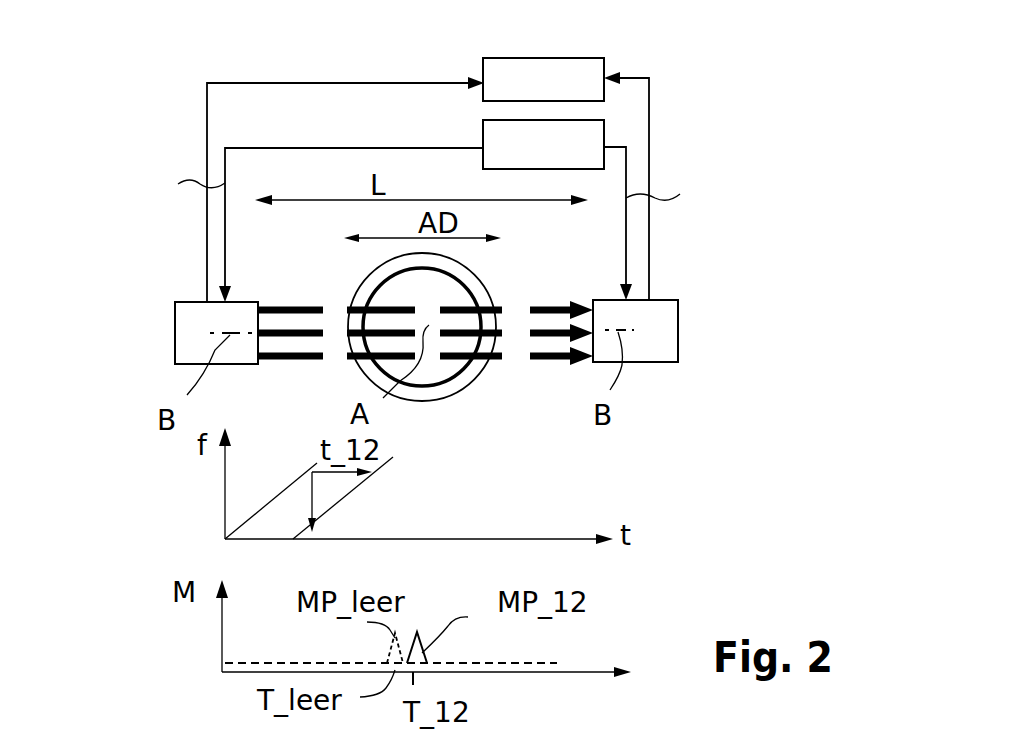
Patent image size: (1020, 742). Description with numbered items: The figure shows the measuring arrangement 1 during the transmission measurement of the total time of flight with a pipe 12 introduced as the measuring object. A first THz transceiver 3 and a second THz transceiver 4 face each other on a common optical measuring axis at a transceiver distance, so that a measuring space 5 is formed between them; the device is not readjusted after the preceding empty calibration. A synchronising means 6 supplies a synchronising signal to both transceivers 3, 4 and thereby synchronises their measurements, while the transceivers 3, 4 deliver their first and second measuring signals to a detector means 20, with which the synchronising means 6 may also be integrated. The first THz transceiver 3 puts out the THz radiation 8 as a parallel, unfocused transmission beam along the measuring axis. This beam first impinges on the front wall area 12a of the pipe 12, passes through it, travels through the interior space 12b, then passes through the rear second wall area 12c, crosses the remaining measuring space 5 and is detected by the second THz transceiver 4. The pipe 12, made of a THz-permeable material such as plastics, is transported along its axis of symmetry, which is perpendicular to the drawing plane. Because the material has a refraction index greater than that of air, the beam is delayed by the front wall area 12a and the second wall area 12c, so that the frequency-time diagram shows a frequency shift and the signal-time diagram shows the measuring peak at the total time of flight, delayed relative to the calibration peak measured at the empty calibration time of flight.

The measuring arrangement 1 is at (738, 122).
The first THz transceiver 3 is at (186, 317).
The second THz transceiver 4 is at (678, 314).
The measuring space 5 is at (334, 350).
The synchronising means 6 is at (500, 130).
The THz radiation 8 is at (551, 362).
The pipe 12 is at (437, 392).
The front wall area 12a is at (352, 318).
The interior space 12b is at (440, 368).
The second wall area 12c is at (490, 317).
The detector means 20 is at (592, 72).